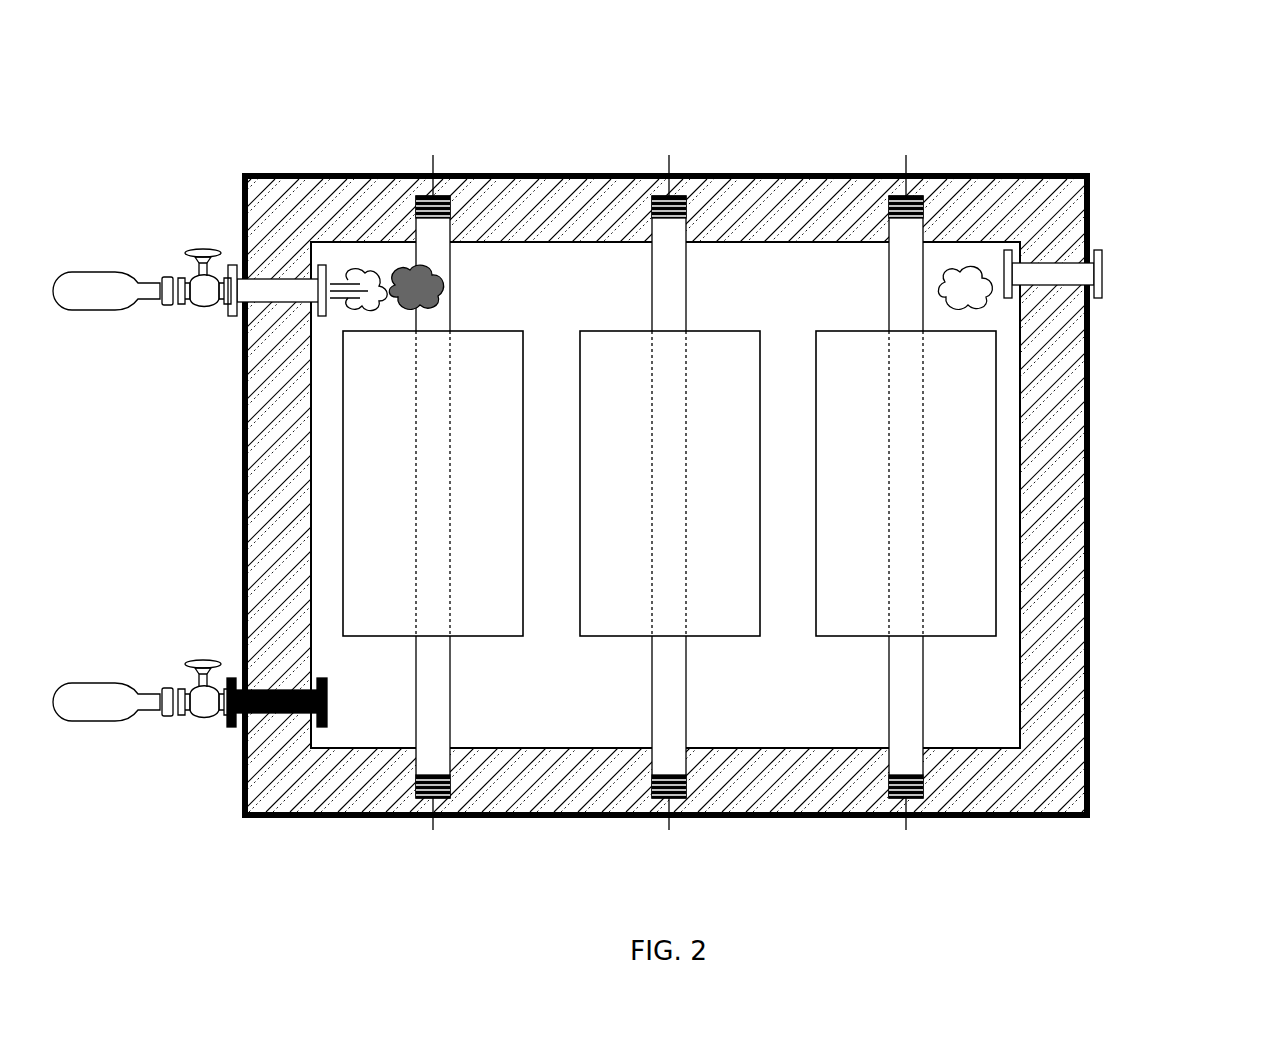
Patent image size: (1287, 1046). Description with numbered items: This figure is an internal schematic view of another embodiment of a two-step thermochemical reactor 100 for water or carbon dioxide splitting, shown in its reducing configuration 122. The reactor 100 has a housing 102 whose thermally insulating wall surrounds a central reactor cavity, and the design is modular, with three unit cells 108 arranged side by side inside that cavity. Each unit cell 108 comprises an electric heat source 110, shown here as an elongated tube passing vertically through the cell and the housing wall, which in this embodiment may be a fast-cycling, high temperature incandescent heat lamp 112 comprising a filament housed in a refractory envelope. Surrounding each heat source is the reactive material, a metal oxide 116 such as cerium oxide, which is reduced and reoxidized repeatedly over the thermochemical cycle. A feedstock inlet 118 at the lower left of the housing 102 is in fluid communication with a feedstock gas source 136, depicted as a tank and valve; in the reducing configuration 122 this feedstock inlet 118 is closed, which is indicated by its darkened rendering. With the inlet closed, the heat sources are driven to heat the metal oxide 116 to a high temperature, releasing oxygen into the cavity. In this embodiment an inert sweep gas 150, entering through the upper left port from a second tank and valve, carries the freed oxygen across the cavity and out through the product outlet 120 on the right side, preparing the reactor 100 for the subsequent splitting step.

The thermochemical reactor 100 is at (669, 457).
The housing 102 is at (283, 173).
The unit cell 108 is at (753, 299).
The electric heat source 110 is at (425, 746).
The incandescent heat lamp 112 is at (678, 720).
The metal oxide 116 is at (976, 578).
The feedstock inlet 118 is at (283, 713).
The product outlet 120 is at (1102, 287).
The reducing configuration 122 is at (960, 116).
The feedstock gas source 136 is at (103, 686).
The inert sweep gas 150 is at (397, 268).